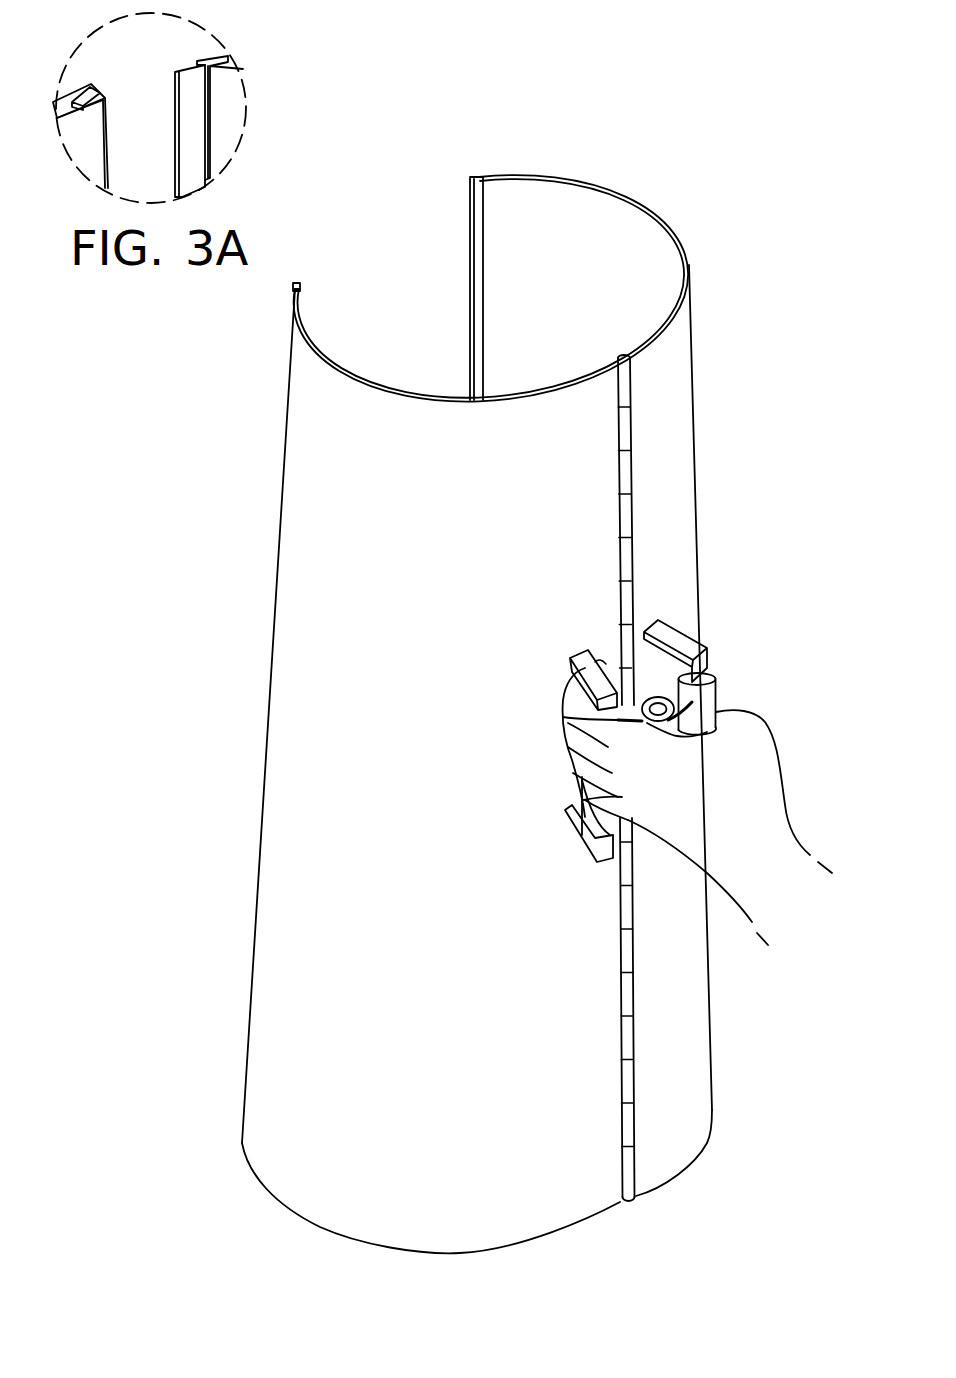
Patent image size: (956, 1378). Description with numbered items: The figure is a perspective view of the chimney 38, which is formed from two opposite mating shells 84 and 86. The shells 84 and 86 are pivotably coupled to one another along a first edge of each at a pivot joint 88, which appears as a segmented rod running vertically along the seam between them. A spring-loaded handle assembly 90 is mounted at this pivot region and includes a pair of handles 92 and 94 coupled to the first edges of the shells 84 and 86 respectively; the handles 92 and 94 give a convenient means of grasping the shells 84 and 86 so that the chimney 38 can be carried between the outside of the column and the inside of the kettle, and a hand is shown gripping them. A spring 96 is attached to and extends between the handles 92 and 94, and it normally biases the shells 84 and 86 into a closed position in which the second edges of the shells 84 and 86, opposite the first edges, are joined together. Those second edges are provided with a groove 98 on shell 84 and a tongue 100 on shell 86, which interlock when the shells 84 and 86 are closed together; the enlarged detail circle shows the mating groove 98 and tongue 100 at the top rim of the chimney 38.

In FIG. 3, the chimney 38 is at (214, 813).
In FIG. 3, the shell 84 is at (303, 497).
In FIG. 3, the shell 86 is at (663, 363).
In FIG. 3, the pivot joint 88 is at (632, 550).
In FIG. 3, the spring-loaded handle assembly 90 is at (688, 712).
In FIG. 3, the handle 92 is at (592, 820).
In FIG. 3, the handle 94 is at (707, 699).
In FIG. 3, the spring 96 is at (688, 722).
In FIG. 3A, the groove 98 is at (78, 90).
In FIG. 3, the groove 98 is at (296, 286).
In FIG. 3A, the tongue 100 is at (193, 115).
In FIG. 3, the tongue 100 is at (472, 205).